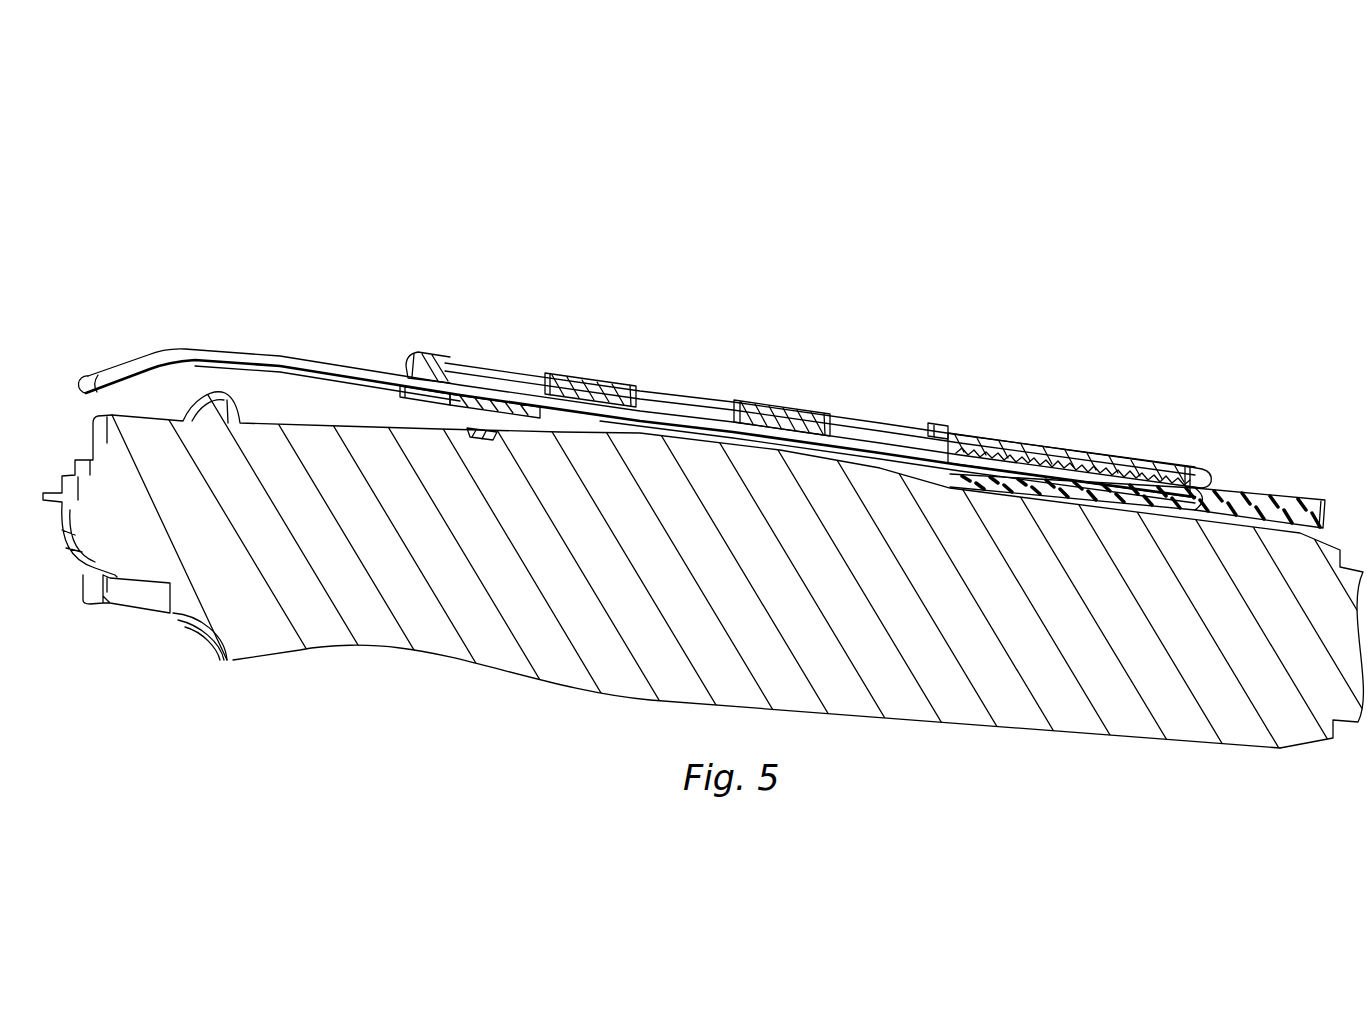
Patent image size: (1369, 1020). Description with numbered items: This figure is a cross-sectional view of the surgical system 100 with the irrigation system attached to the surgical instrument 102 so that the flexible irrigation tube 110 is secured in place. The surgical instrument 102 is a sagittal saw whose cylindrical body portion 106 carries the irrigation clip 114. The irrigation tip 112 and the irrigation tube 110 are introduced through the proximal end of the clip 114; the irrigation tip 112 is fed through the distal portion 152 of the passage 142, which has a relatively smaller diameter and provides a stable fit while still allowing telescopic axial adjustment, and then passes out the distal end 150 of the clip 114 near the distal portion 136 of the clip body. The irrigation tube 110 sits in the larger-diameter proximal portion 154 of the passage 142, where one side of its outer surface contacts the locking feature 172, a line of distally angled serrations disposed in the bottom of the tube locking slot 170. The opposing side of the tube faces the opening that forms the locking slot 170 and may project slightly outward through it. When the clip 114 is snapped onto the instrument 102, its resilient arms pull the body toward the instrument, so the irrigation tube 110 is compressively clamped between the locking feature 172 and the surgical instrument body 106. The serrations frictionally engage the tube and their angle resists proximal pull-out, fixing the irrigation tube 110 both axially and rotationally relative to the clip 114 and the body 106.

The surgical system 100 is at (706, 434).
The surgical instrument 102 is at (515, 675).
The cylindrical body portion 106 is at (1020, 732).
The flexible irrigation tube 110 is at (1283, 488).
The irrigation tip 112 is at (300, 358).
The irrigation clip 114 is at (792, 405).
The distal portion 136 is at (1168, 464).
The passage 142 is at (487, 386).
The distal end 150 is at (405, 370).
The distal portion 152 is at (598, 410).
The proximal portion 154 is at (950, 454).
The tube locking slot 170 is at (1046, 492).
The locking feature 172 is at (1062, 455).